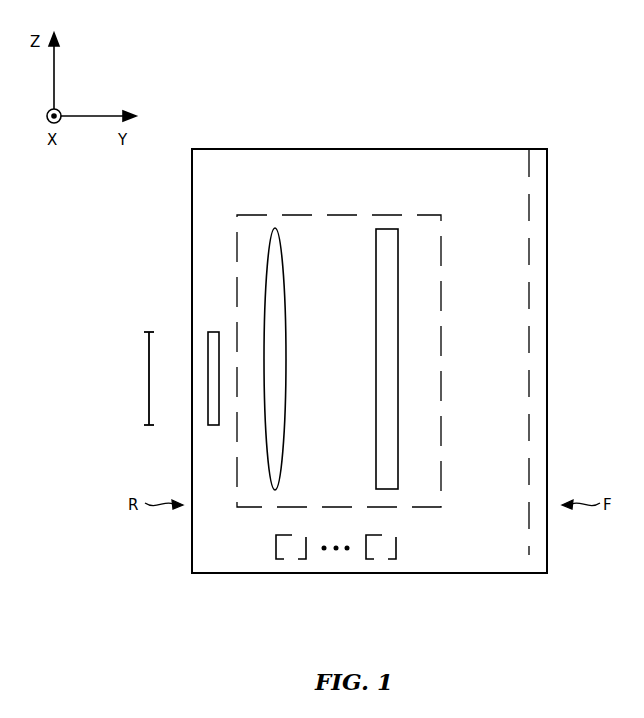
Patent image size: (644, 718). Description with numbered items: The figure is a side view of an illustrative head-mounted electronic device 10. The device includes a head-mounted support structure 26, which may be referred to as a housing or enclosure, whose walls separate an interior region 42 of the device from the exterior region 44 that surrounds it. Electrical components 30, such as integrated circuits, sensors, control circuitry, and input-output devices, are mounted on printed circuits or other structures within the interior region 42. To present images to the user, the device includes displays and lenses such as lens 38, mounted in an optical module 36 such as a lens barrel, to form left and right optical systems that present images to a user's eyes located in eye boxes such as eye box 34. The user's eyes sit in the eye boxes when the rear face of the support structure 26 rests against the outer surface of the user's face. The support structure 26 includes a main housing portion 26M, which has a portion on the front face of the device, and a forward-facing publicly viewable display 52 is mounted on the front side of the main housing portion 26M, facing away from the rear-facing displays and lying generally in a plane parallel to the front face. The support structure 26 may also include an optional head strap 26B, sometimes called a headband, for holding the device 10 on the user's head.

The head-mounted device 10 is at (584, 300).
The head-mounted support structure 26 is at (547, 127).
The strap 26B is at (214, 332).
The main housing portion 26M is at (217, 574).
The electrical components 30 is at (380, 560).
The eye box 34 is at (386, 229).
The optical module 36 is at (441, 274).
The lens 38 is at (275, 228).
The interior region 42 is at (477, 549).
The exterior region 44 is at (498, 73).
The display 52 is at (537, 210).